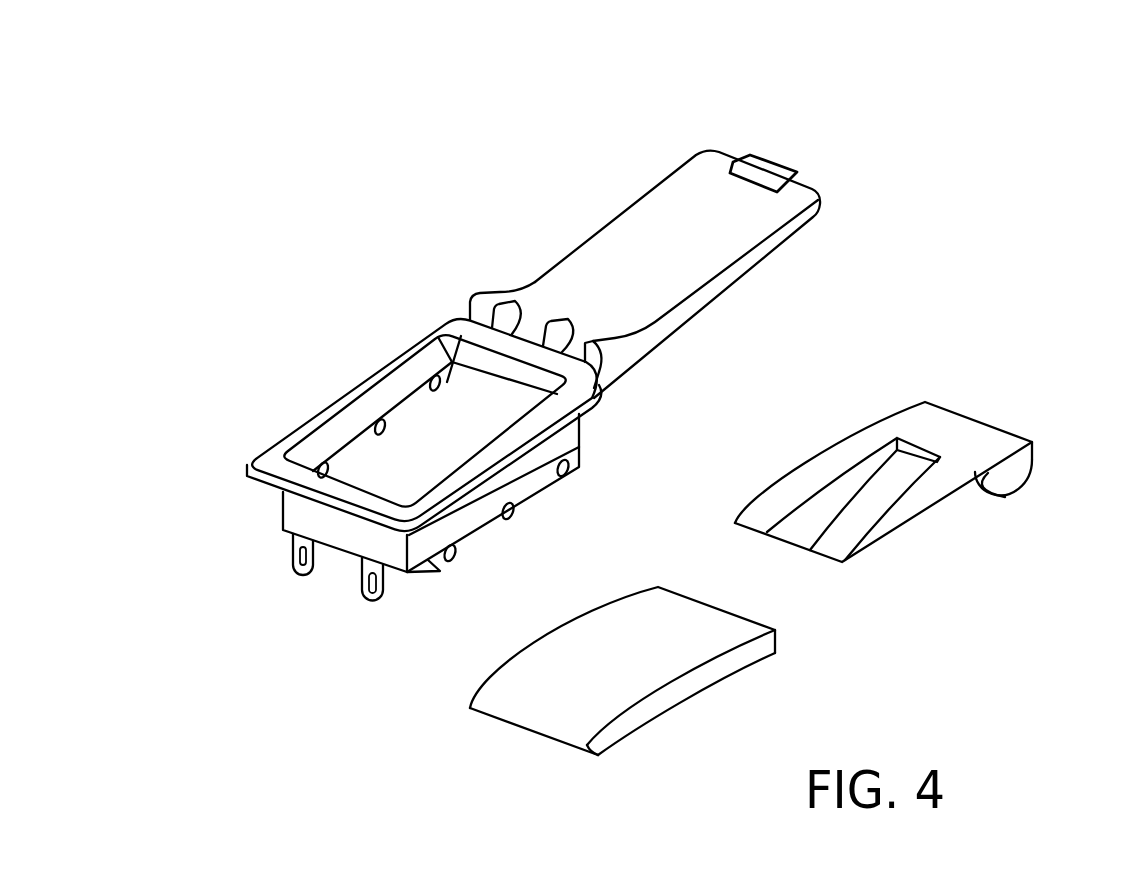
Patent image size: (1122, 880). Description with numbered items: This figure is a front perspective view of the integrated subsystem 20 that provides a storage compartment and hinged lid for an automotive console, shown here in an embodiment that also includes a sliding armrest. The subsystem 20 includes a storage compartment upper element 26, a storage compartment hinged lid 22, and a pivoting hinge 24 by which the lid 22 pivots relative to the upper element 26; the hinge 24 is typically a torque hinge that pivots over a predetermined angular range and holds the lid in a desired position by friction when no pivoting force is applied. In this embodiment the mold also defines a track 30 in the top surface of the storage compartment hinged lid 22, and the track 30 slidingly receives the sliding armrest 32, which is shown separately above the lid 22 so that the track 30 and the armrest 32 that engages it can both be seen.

The integrated subsystem 20 is at (476, 127).
The storage compartment hinged lid 22 is at (797, 196).
The pivoting hinge 24 is at (578, 344).
The storage compartment upper element 26 is at (263, 462).
The track 30 is at (802, 533).
The sliding armrest 32 is at (523, 708).